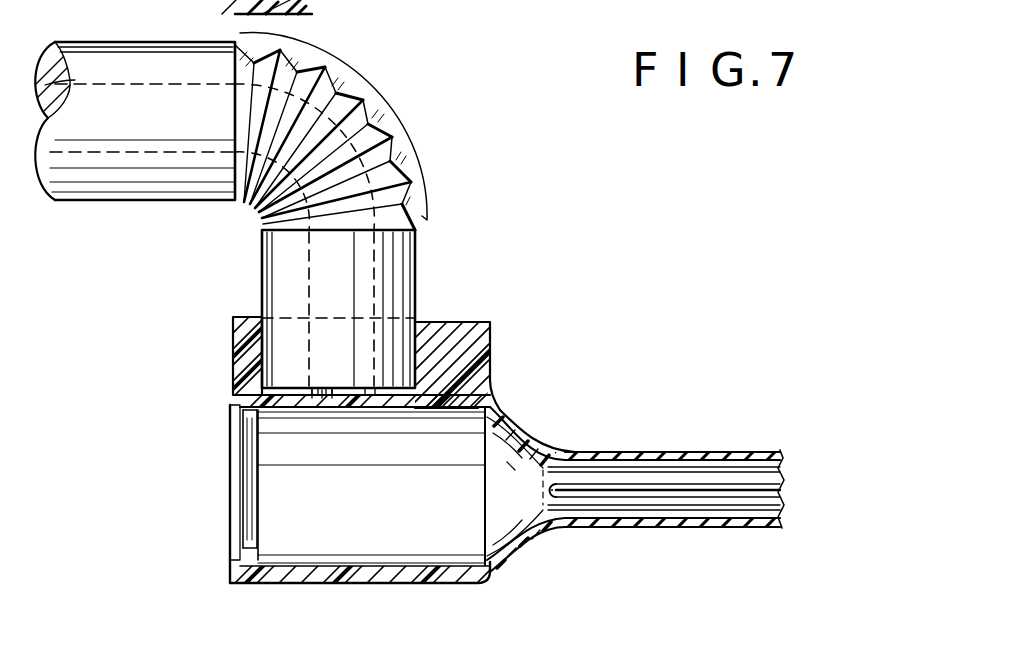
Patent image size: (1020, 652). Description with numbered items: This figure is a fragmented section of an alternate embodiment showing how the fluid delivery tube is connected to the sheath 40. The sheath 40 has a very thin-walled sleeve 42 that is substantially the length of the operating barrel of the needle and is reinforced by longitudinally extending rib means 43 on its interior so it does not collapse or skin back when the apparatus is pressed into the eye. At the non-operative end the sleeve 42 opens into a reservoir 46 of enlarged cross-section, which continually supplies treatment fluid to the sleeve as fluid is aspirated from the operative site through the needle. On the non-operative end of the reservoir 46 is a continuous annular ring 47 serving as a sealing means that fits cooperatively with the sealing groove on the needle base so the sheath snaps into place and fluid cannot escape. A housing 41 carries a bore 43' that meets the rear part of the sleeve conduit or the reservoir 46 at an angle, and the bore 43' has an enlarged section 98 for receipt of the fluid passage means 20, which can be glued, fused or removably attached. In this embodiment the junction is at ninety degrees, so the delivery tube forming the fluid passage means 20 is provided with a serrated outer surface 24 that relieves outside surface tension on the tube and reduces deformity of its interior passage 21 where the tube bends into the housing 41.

The fluid passage means 20 is at (107, 42).
The interior passage 21 is at (152, 118).
The serrated outer surface 24 is at (368, 90).
The enlarged section 98 is at (413, 340).
The housing 41 is at (470, 342).
The sheath 40 is at (528, 402).
The sleeve 42 is at (641, 447).
The rib means 43 is at (661, 462).
The bore 43' is at (329, 366).
The reservoir 46 is at (398, 538).
The continuous annular ring 47 is at (250, 428).